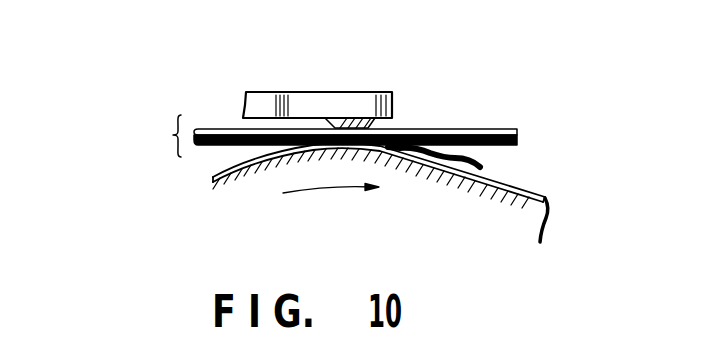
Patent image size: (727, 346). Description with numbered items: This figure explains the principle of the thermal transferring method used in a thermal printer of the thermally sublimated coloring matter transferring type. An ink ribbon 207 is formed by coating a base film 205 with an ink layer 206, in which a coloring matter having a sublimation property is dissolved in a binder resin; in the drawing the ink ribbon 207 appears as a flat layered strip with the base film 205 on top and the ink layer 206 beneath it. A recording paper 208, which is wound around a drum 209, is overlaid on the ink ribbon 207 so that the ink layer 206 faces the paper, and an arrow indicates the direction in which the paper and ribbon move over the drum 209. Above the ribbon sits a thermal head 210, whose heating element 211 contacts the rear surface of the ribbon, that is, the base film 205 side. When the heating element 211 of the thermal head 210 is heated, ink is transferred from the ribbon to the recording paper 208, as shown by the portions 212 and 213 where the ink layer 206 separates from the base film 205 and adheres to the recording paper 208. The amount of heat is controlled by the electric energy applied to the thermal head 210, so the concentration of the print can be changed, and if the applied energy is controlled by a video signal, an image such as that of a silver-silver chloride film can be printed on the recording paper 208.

The base film 205 is at (206, 129).
The ink layer 206 is at (215, 179).
The ink ribbon 207 is at (173, 136).
The recording paper 208 is at (546, 197).
The drum 209 is at (514, 226).
The thermal head 210 is at (362, 91).
The heating element 211 is at (376, 127).
The transferred ink portion 212 is at (425, 148).
The transferred ink portion 213 is at (440, 158).